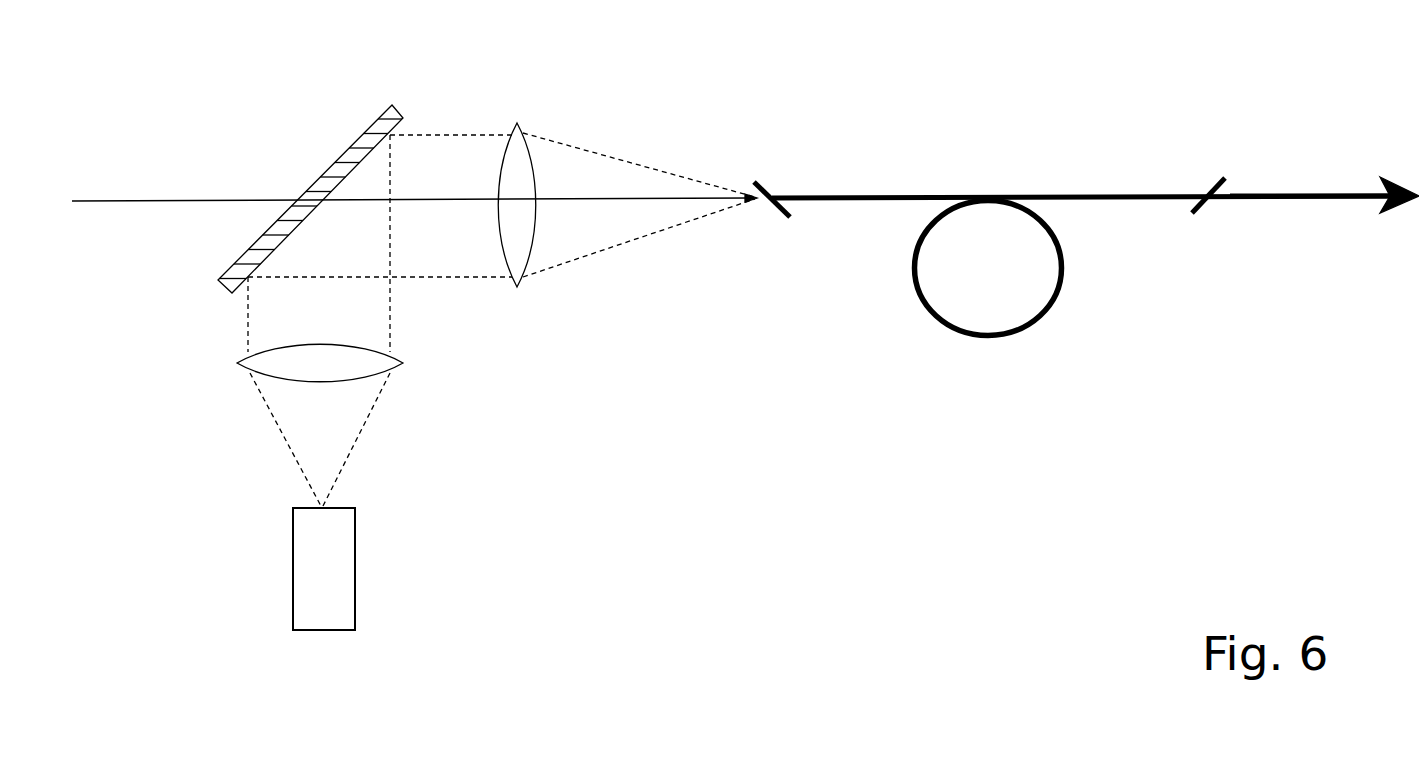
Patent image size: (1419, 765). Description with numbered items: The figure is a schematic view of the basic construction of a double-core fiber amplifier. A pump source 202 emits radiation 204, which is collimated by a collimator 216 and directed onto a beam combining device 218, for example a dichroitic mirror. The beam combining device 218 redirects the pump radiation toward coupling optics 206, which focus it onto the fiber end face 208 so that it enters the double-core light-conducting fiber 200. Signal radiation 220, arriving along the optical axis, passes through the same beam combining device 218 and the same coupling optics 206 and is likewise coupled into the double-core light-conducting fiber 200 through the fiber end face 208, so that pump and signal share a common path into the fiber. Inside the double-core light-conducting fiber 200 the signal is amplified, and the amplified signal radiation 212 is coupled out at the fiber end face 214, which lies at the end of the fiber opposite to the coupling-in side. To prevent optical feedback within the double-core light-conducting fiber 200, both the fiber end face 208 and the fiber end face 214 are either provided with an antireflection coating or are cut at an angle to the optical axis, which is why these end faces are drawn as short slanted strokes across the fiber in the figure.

The double-core light-conducting fiber 200 is at (818, 205).
The pump source 202 is at (320, 600).
The radiation 204 is at (368, 402).
The coupling optics 206 is at (515, 122).
The fiber end face 208 is at (762, 178).
The amplified signal radiation 212 is at (1277, 202).
The fiber end face 214 is at (1195, 215).
The collimator 216 is at (380, 357).
The beam combining device 218 is at (377, 120).
The signal radiation 220 is at (85, 201).